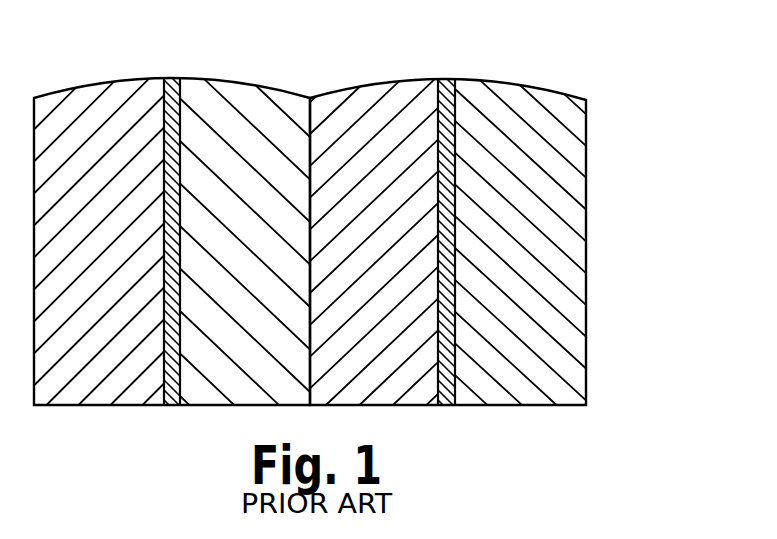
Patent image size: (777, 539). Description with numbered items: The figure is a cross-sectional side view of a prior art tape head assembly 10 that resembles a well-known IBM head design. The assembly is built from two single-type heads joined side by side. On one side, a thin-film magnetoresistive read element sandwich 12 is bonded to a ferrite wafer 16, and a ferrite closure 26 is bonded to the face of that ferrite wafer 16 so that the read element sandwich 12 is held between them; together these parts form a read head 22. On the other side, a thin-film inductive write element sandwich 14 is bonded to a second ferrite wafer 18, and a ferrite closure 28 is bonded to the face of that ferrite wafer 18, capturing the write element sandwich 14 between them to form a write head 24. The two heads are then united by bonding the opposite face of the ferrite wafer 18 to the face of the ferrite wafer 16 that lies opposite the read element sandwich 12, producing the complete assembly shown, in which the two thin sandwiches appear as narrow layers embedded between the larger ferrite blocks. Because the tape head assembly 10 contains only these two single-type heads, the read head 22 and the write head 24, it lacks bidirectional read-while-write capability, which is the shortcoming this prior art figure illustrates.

The tape head assembly 10 is at (652, 101).
The read element sandwich 12 is at (172, 87).
The write element sandwich 14 is at (445, 88).
The ferrite wafer 16 is at (255, 108).
The ferrite wafer 18 is at (380, 108).
The read head 22 is at (35, 410).
The write head 24 is at (585, 411).
The ferrite closure 26 is at (134, 110).
The ferrite closure 28 is at (532, 97).